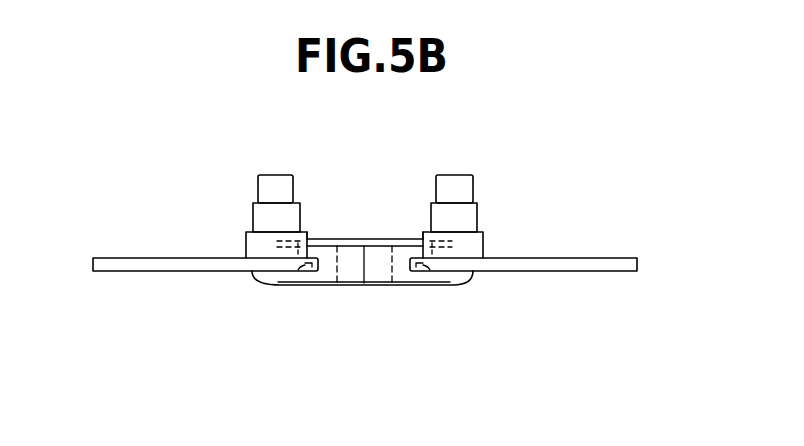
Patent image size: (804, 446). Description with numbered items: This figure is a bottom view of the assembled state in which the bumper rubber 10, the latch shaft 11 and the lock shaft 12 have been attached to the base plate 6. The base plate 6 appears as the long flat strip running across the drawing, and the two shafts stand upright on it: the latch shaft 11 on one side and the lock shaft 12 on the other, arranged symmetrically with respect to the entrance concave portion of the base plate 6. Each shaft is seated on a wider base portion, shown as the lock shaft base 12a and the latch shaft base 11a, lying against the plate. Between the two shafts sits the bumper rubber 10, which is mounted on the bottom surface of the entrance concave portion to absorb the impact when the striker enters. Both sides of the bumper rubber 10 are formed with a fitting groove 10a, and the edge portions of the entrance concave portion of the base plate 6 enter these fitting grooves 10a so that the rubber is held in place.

The base plate 6 is at (120, 258).
The bumper rubber 10 is at (365, 285).
The fitting groove 10a is at (305, 268).
The latch shaft 11 is at (455, 180).
The terminal base 11a is at (480, 245).
The lock shaft 12 is at (275, 178).
The terminal base 12a is at (246, 240).